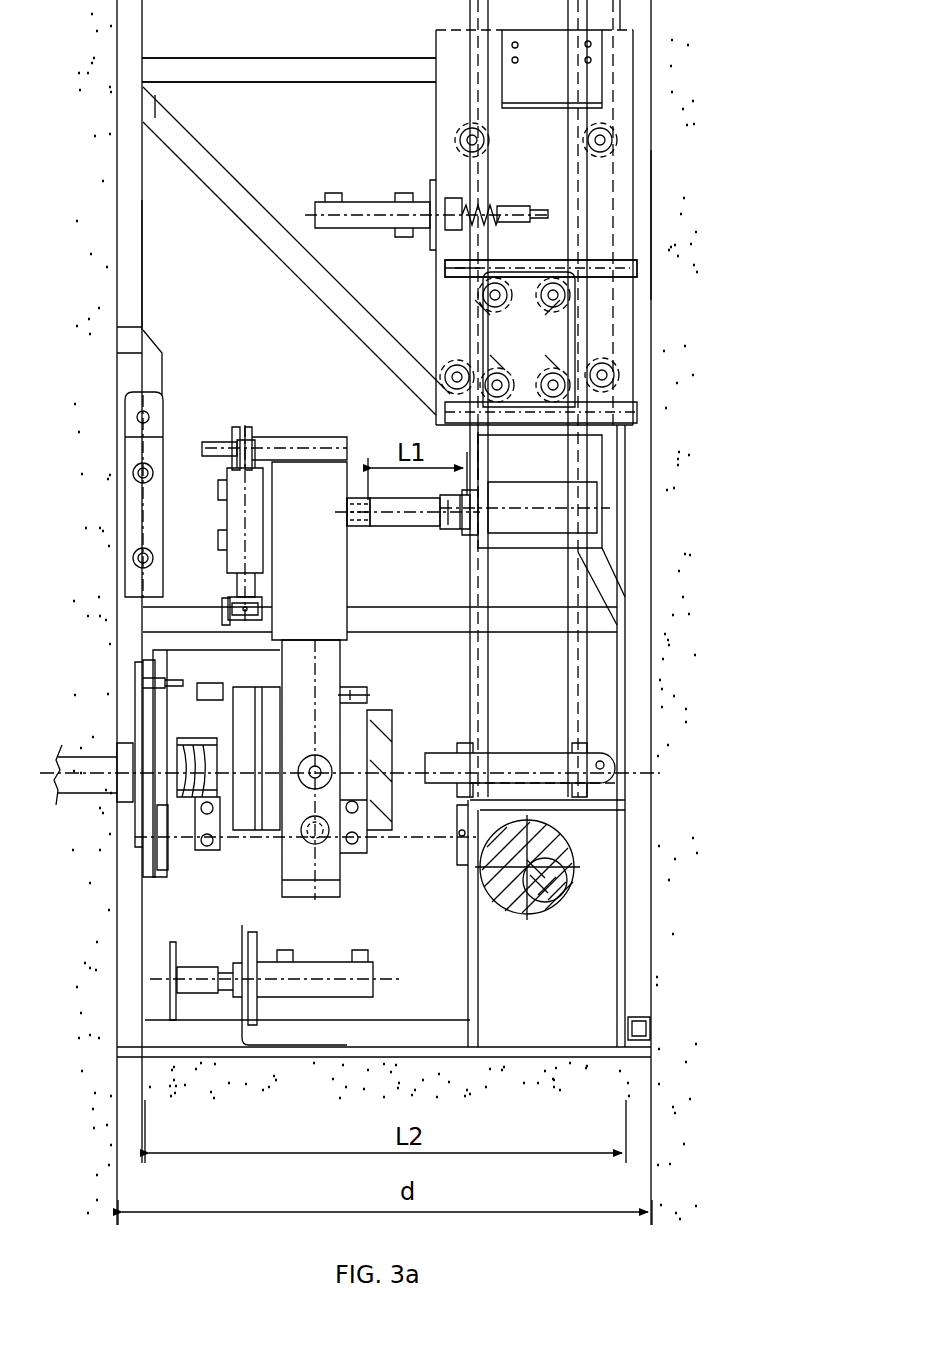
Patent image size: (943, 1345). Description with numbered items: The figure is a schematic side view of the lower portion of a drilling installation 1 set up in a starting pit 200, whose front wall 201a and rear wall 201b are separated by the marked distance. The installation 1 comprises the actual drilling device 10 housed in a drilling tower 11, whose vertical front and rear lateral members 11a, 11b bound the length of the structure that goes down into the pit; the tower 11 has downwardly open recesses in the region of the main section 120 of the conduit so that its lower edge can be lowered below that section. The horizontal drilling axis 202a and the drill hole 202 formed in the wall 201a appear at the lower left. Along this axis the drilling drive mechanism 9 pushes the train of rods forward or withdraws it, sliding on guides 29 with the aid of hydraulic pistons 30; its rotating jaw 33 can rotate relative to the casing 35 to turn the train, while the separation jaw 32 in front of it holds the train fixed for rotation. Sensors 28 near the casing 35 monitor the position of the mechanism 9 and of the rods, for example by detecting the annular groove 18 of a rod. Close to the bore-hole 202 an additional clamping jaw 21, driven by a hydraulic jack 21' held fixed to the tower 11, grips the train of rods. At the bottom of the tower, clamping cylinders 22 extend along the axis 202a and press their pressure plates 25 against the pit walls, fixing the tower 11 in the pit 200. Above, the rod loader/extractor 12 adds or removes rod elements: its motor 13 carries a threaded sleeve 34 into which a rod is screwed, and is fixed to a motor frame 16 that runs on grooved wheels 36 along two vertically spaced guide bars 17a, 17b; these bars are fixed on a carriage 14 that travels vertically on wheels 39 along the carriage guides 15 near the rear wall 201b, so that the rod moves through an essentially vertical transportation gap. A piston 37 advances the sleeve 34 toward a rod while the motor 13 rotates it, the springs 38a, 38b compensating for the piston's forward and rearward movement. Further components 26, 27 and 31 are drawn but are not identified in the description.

The drilling installation 1 is at (258, 188).
The drilling drive mechanism 9 is at (342, 668).
The drilling device 10 is at (262, 430).
The drilling tower 11 is at (156, 98).
The vertical front lateral member 11a is at (125, 170).
The vertical rear lateral member 11b is at (642, 612).
The rod loader/extractor 12 is at (432, 100).
The motor 13 is at (532, 530).
The carriage 14 is at (446, 42).
The carriage guides 15 is at (573, 672).
The motor frame 16 is at (483, 440).
The guide 17a is at (445, 268).
The guide 17b is at (445, 408).
The annular groove 18 is at (366, 527).
The clamping jaw 21 is at (104, 768).
The hydraulic jack 21' is at (169, 463).
The clamping cylinders 22 is at (375, 980).
The pressure plates 25 is at (174, 940).
The coupling 26 is at (462, 522).
The threaded sleeve 27 is at (366, 497).
The sensors 28 is at (185, 745).
The guides 29 is at (418, 615).
The hydraulic pistons 30 is at (455, 755).
The valve 31 is at (237, 505).
The separation jaw 32 is at (225, 605).
The rotating jaw 33 is at (318, 712).
The threaded sleeve 34 is at (468, 520).
The casing 35 is at (345, 880).
The wheels 36 is at (530, 375).
The piston 37 is at (368, 210).
The spring 38a is at (454, 200).
The spring 38b is at (475, 205).
The wheels 39 is at (480, 140).
The main section 120 is at (508, 905).
The starting pit 200 is at (125, 253).
The front wall 201a is at (121, 282).
The rear wall 201b is at (638, 192).
The drill hole 202 is at (98, 790).
The drilling axis 202a is at (40, 774).